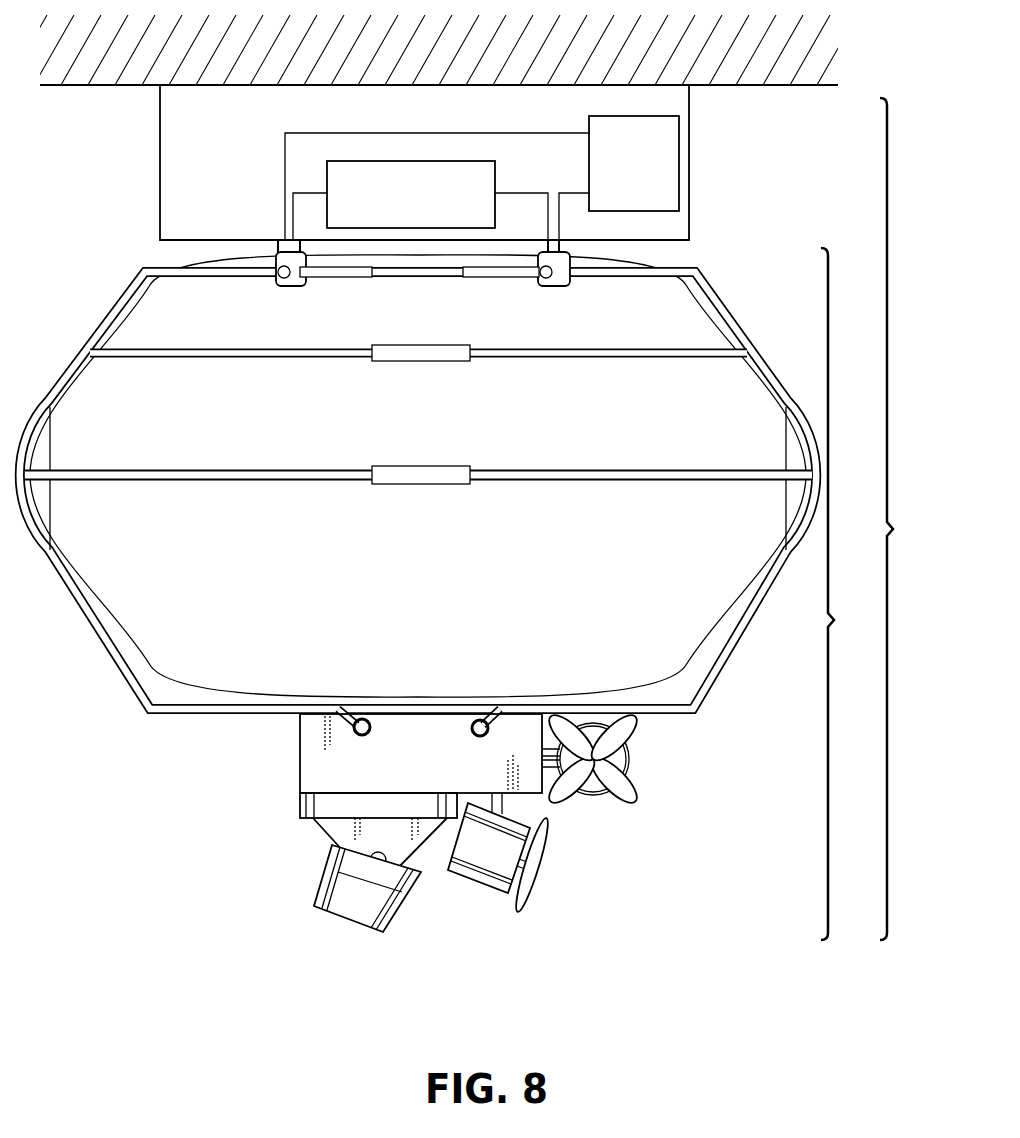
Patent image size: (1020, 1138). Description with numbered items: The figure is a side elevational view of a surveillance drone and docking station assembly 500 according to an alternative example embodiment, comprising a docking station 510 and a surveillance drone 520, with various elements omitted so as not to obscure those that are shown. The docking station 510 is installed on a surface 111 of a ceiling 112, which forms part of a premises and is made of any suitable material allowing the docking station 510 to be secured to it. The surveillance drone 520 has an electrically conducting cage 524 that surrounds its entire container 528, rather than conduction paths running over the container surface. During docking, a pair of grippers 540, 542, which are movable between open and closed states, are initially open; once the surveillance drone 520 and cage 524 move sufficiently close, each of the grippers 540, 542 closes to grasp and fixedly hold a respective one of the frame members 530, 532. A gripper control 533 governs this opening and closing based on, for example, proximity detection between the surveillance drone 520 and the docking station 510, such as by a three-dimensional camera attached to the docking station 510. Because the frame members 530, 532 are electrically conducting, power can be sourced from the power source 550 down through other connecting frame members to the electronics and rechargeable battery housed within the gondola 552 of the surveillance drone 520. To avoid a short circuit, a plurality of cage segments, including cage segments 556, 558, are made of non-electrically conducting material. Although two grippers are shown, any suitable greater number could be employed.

The ceiling 112 is at (442, 59).
The surface 111 is at (125, 88).
The docking station 510 is at (220, 171).
The gripper control 533 is at (429, 222).
The power source 550 is at (653, 200).
The electrically conducting cage 524 is at (120, 296).
The container 528 is at (436, 630).
The frame member 530 is at (352, 279).
The frame member 532 is at (490, 279).
The gripper 540 is at (296, 286).
The gripper 542 is at (562, 286).
The cage segment 556 is at (420, 362).
The cage segment 558 is at (420, 485).
The gondola 552 is at (300, 743).
The surveillance drone and docking station assembly 500 is at (907, 519).
The surveillance drone 520 is at (847, 594).